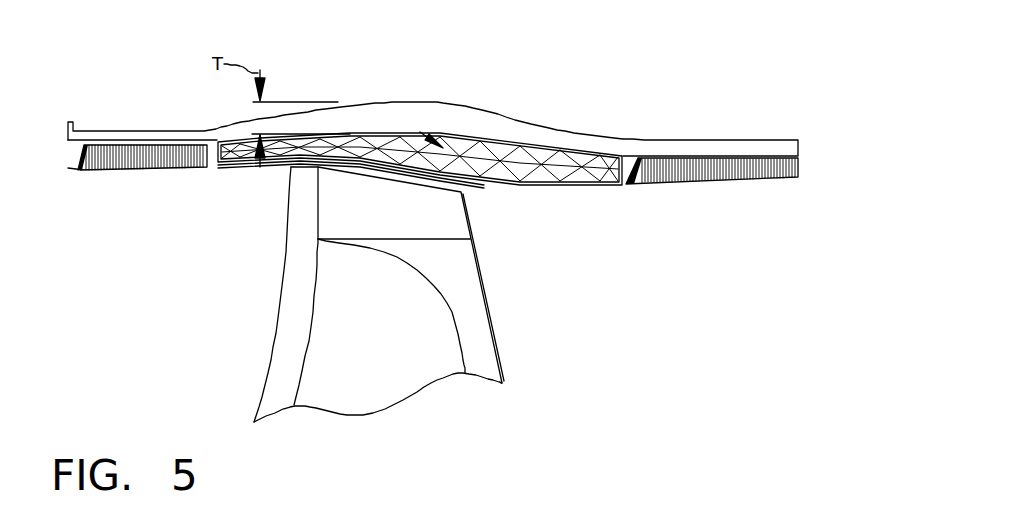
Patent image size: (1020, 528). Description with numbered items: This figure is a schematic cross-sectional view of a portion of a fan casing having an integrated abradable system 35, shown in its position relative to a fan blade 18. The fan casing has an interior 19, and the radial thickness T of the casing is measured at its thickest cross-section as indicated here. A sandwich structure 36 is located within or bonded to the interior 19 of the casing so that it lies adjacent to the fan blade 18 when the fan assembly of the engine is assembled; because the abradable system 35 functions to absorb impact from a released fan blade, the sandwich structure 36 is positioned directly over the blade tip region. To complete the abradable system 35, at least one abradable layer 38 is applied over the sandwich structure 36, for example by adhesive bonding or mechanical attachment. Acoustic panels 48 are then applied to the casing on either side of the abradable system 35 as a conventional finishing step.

The fan blade 18 is at (423, 298).
The interior 19 is at (465, 154).
The abradable system 35 is at (678, 75).
The sandwich structure 36 is at (560, 157).
The abradable layer 38 is at (472, 193).
The acoustic panel 48 is at (148, 172).